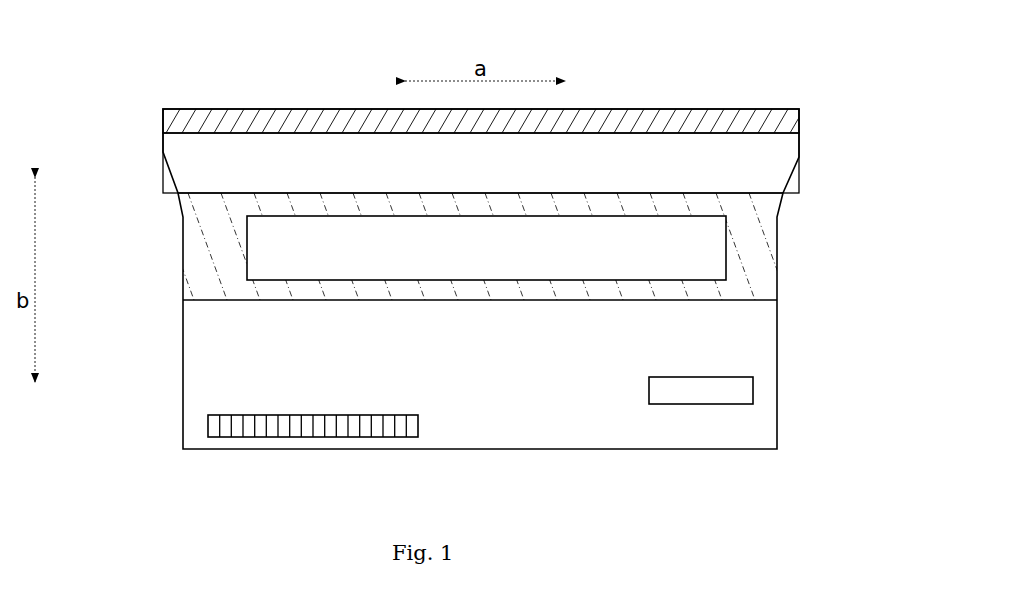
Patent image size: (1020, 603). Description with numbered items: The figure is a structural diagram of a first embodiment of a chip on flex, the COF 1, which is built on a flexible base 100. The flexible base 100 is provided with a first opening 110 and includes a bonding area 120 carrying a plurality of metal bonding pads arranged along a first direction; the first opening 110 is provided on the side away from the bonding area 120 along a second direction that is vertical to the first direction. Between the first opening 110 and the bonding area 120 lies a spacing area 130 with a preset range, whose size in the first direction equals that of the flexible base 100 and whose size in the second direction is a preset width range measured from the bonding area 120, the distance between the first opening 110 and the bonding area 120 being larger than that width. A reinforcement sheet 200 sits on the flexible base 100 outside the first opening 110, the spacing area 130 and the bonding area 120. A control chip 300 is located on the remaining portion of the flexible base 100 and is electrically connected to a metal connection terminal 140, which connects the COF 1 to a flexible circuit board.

The chip on flex 1 is at (153, 186).
The flexible base 100 is at (793, 181).
The first opening 110 is at (280, 247).
The bonding area 120 is at (245, 113).
The spacing area 130 is at (783, 148).
The metal connection terminal 140 is at (208, 426).
The reinforcement sheet 200 is at (758, 263).
The control chip 300 is at (723, 387).